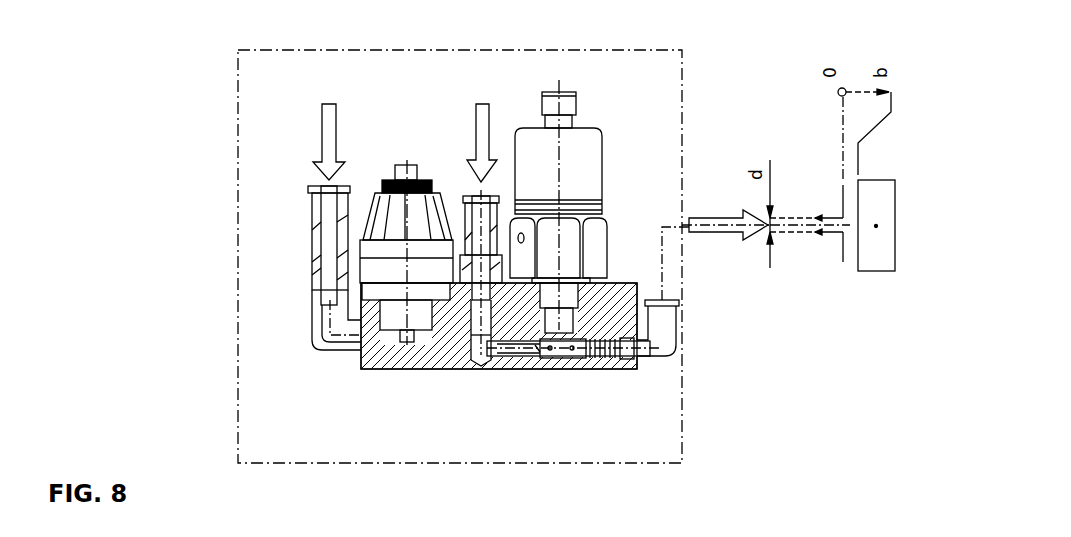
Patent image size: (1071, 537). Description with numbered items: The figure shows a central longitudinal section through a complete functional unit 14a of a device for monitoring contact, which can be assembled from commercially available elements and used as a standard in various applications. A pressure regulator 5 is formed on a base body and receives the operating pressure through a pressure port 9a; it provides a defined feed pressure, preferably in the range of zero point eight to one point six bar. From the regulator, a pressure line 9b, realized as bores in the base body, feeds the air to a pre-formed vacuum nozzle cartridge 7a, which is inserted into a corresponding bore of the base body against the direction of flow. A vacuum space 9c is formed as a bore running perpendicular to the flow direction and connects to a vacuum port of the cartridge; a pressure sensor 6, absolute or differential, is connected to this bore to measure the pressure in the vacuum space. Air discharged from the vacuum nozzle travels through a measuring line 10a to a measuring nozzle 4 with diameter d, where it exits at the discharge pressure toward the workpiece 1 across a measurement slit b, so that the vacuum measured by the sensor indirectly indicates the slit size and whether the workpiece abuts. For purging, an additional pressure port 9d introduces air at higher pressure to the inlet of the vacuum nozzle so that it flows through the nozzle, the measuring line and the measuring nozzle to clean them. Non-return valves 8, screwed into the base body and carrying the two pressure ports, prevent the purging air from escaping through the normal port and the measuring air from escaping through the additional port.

The workpiece 1 is at (882, 272).
The measuring nozzle 4 is at (823, 233).
The pressure regulator 5 is at (405, 172).
The pressure sensor 6 is at (590, 177).
The vacuum nozzle cartridge 7a is at (558, 353).
The non-return valves 8 is at (322, 228).
The pressure port 9a is at (322, 132).
The pressure line 9b is at (470, 335).
The vacuum space 9c is at (537, 348).
The additional pressure port 9d is at (470, 128).
The measuring line 10a is at (721, 218).
The functional unit 14a is at (647, 464).